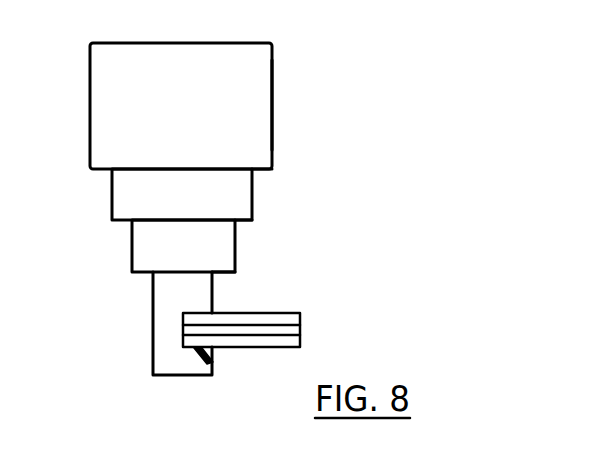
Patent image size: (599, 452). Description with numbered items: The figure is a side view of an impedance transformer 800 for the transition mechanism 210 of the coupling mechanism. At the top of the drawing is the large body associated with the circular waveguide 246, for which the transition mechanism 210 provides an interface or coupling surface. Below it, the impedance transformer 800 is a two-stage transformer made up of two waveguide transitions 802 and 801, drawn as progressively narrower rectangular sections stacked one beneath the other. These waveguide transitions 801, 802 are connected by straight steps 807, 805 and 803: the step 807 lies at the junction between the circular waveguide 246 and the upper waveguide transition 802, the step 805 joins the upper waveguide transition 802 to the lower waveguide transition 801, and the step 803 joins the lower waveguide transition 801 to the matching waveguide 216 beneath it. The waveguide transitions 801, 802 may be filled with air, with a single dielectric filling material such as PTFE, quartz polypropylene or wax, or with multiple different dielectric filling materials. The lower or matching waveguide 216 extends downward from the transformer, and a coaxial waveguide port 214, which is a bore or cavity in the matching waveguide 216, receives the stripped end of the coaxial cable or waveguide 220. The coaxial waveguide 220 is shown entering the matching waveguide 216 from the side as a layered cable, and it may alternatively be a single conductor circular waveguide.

The transition mechanism 210 is at (259, 29).
The circular waveguide 246 is at (272, 118).
The impedance transformer 800 is at (288, 217).
The waveguide transition 801 is at (132, 250).
The waveguide transition 802 is at (112, 194).
The straight step 803 is at (212, 275).
The straight step 805 is at (241, 222).
The straight step 807 is at (272, 170).
The matching waveguide 216 is at (153, 345).
The coaxial waveguide 220 is at (290, 311).
The coaxial waveguide port 214 is at (211, 361).